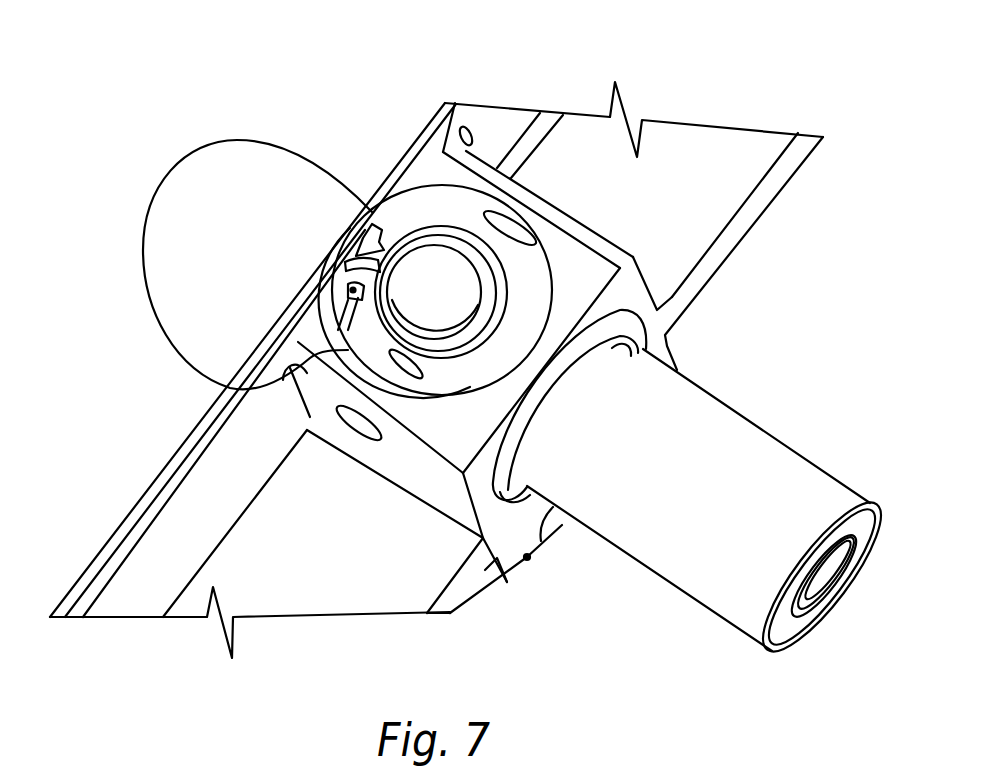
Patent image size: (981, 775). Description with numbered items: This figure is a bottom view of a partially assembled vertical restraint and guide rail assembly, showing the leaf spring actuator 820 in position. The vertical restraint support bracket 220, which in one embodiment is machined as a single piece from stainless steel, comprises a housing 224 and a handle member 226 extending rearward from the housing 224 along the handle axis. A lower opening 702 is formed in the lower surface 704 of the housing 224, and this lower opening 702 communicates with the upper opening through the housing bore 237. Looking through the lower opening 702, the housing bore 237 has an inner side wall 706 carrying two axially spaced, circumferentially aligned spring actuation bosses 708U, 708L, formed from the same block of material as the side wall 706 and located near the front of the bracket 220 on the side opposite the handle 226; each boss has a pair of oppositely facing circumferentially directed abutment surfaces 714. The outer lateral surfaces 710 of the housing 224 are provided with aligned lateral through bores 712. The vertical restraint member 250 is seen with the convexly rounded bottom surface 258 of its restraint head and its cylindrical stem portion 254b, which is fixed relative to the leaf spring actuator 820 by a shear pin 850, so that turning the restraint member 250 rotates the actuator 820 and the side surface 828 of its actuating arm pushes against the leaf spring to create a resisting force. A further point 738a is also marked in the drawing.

The vertical restraint support bracket 220 is at (160, 447).
The housing 224 is at (652, 274).
The handle member 226 is at (712, 502).
The housing bore 237 is at (530, 284).
The vertical restraint member 250 is at (216, 128).
The cylindrical stem portion 254b is at (420, 272).
The convexly rounded bottom surface 258 is at (240, 253).
The lower opening 702 is at (463, 198).
The lower surface 704 is at (578, 292).
The inner side wall 706 is at (437, 207).
The lower spring actuation boss 708L is at (365, 240).
The upper spring actuation boss 708U is at (283, 380).
The outer lateral surface 710 is at (450, 500).
The lateral through bore 712 is at (517, 230).
The circumferentially directed abutment surface 714 is at (347, 291).
The pivot point 738a is at (527, 558).
The leaf spring actuator 820 is at (493, 338).
The side surface 828 is at (348, 295).
The shear pin 850 is at (400, 378).